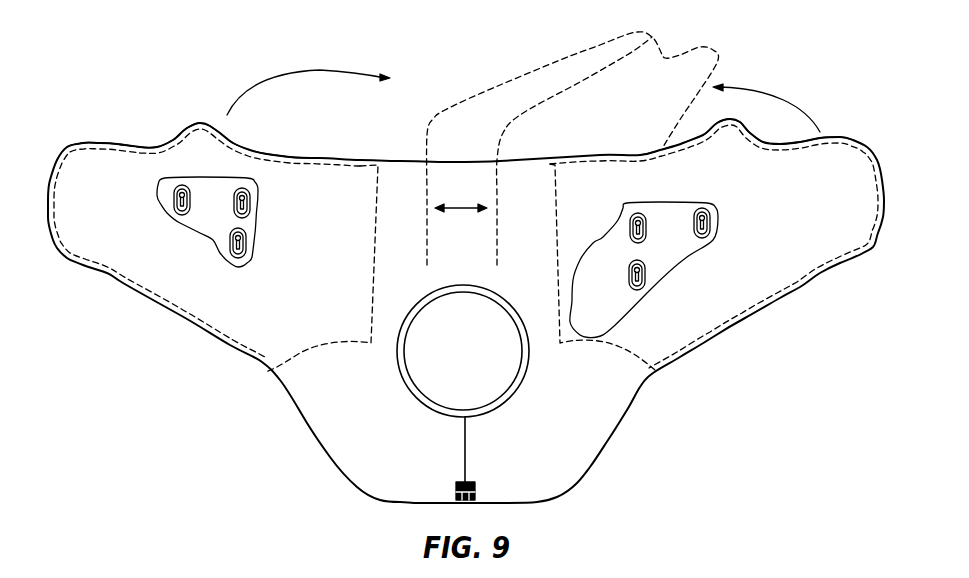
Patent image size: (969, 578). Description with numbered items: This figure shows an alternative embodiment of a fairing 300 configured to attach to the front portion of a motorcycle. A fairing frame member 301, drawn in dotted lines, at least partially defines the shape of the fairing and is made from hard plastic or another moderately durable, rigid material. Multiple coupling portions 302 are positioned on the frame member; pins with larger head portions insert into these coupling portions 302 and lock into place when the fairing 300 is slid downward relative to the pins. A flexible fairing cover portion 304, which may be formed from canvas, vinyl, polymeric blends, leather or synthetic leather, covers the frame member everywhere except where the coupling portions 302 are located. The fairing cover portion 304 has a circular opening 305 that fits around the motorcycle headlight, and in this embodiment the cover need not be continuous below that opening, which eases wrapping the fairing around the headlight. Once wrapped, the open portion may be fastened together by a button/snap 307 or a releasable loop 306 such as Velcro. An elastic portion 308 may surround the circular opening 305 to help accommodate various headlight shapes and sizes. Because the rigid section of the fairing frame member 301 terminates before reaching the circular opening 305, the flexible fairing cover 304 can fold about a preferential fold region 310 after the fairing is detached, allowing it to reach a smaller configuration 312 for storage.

The fairing 300 is at (467, 114).
The fairing frame member 301 is at (327, 160).
The coupling portions 302 is at (250, 201).
The flexible fairing cover portion 304 is at (330, 453).
The circular opening 305 is at (502, 362).
The releasable loop 306 is at (467, 445).
The button/snap 307 is at (476, 489).
The elastic portion 308 is at (414, 393).
The preferential fold region 310 is at (462, 205).
The smaller configuration 312 is at (692, 62).